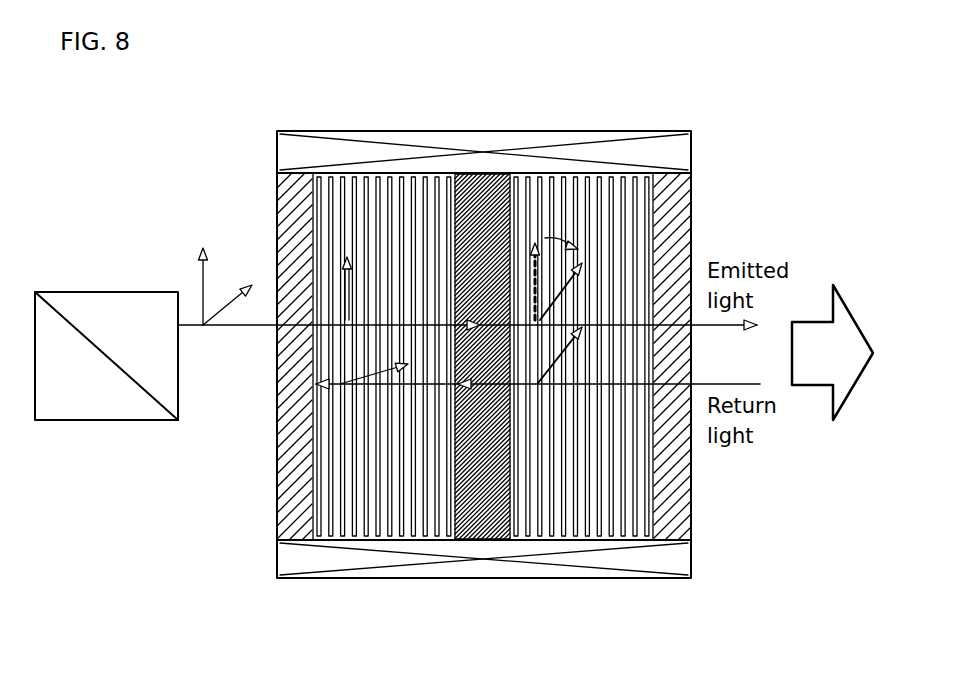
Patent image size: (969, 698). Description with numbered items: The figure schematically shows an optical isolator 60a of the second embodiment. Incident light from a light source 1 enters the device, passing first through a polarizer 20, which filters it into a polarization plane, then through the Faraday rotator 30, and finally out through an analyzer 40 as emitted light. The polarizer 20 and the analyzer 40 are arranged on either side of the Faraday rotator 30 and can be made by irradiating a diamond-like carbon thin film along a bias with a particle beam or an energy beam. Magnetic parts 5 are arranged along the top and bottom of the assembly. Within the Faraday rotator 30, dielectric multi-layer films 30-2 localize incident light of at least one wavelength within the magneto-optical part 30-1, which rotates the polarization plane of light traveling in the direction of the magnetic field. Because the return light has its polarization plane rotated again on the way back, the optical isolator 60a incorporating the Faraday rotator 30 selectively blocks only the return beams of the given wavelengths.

The light source 1 is at (110, 292).
The magnetic parts 5 is at (495, 138).
The polarizer 20 is at (292, 208).
The Faraday rotator 30 is at (483, 374).
The magneto-optical part 30-1 is at (500, 541).
The dielectric multi-layer films 30-2 is at (387, 541).
The analyzer 40 is at (673, 247).
The optical isolator 60a is at (715, 133).